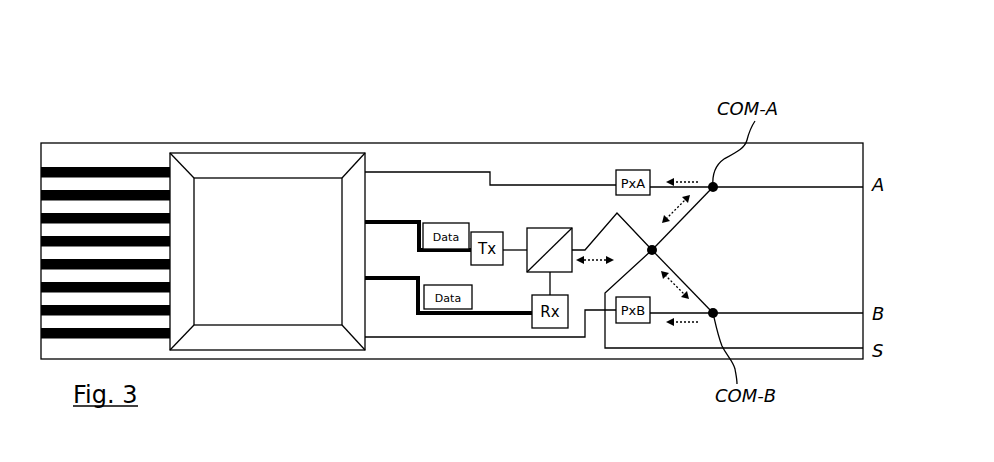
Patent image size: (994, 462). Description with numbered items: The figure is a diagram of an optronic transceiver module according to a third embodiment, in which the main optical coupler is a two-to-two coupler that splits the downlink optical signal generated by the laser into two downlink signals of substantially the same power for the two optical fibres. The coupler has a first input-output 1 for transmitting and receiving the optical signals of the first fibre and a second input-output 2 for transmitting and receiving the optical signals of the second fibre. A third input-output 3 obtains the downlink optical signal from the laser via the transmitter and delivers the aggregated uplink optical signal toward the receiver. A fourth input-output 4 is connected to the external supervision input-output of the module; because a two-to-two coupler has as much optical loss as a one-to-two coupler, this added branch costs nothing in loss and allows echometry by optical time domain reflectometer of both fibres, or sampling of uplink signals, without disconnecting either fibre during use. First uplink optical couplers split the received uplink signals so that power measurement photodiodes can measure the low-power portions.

The first input-output of the main optical coupler 1 is at (682, 218).
The second input-output of the main optical coupler 2 is at (682, 281).
The third input-output of the main optical coupler 3 is at (612, 231).
The fourth input-output of the main optical coupler 4 is at (734, 299).